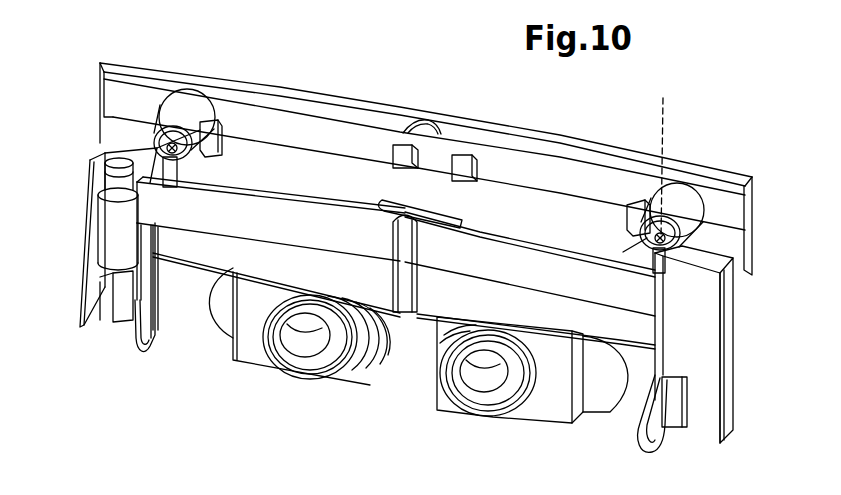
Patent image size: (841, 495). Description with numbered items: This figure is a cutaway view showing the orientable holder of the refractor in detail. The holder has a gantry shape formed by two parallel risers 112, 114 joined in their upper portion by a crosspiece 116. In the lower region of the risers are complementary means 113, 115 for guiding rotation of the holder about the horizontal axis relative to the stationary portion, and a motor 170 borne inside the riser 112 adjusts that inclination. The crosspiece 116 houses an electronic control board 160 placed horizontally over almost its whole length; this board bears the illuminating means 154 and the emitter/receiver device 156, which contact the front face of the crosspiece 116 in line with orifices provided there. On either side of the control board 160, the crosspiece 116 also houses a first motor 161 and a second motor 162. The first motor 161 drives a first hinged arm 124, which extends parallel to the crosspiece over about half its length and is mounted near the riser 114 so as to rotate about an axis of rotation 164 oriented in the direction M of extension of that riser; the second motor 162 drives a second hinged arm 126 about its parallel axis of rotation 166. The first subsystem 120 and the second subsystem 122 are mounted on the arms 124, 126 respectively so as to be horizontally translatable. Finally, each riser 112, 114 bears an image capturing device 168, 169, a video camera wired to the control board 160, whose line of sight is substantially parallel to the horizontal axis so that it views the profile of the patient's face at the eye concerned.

The riser 112 is at (84, 213).
The complementary means for guiding rotation about the horizontal axis 113 is at (118, 310).
The riser 114 is at (727, 347).
The complementary means for guiding rotation about the horizontal axis 115 is at (677, 400).
The crosspiece 116 is at (427, 122).
The first subsystem 120 is at (443, 405).
The second subsystem 122 is at (340, 392).
The first hinged arm 124 is at (510, 305).
The second hinged arm 126 is at (280, 258).
The illuminating means 154 is at (396, 153).
The emitter/receiver device 156 is at (462, 163).
The electronic control board 160 is at (282, 172).
The first motor 161 is at (677, 200).
The second motor 162 is at (182, 110).
The axis of rotation 164 is at (665, 267).
The axis of rotation 166 is at (163, 156).
The image capturing device 168 is at (143, 348).
The image capturing device 169 is at (673, 435).
The motor 170 is at (112, 270).
The axis M is at (667, 154).